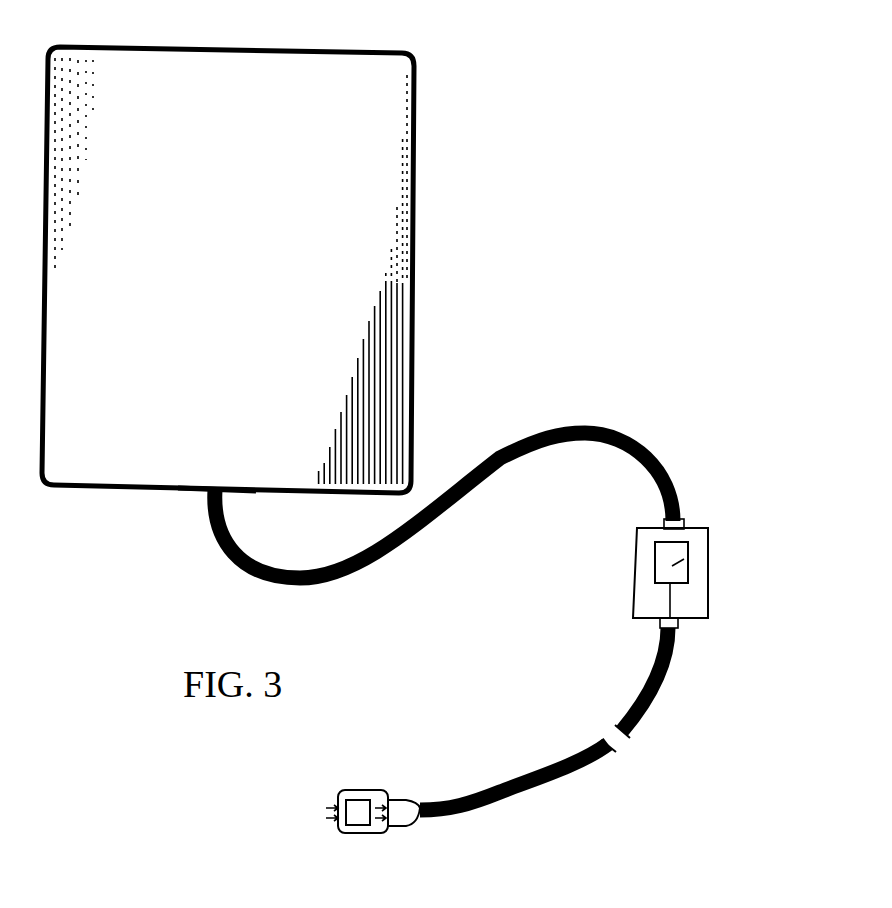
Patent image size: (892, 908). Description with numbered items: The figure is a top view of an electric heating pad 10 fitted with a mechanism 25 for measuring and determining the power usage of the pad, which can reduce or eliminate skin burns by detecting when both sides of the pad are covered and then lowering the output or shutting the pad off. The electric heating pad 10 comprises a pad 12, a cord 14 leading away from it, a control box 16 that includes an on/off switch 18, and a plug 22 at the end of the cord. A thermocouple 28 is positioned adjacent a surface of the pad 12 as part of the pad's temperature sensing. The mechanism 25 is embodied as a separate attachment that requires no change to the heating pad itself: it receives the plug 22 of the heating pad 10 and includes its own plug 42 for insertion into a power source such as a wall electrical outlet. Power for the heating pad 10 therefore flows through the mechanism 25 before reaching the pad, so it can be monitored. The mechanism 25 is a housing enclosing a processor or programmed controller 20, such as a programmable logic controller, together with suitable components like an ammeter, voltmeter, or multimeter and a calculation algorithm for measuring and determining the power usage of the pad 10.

The electric heating pad 10 is at (450, 82).
The pad 12 is at (382, 181).
The cord 14 is at (578, 430).
The control box 16 is at (706, 530).
The on/off switch 18 is at (690, 556).
The programmed controller 20 is at (352, 806).
The plug 22 is at (397, 810).
The mechanism 25 is at (386, 830).
The thermocouple 28 is at (168, 486).
The plug 42 is at (334, 810).